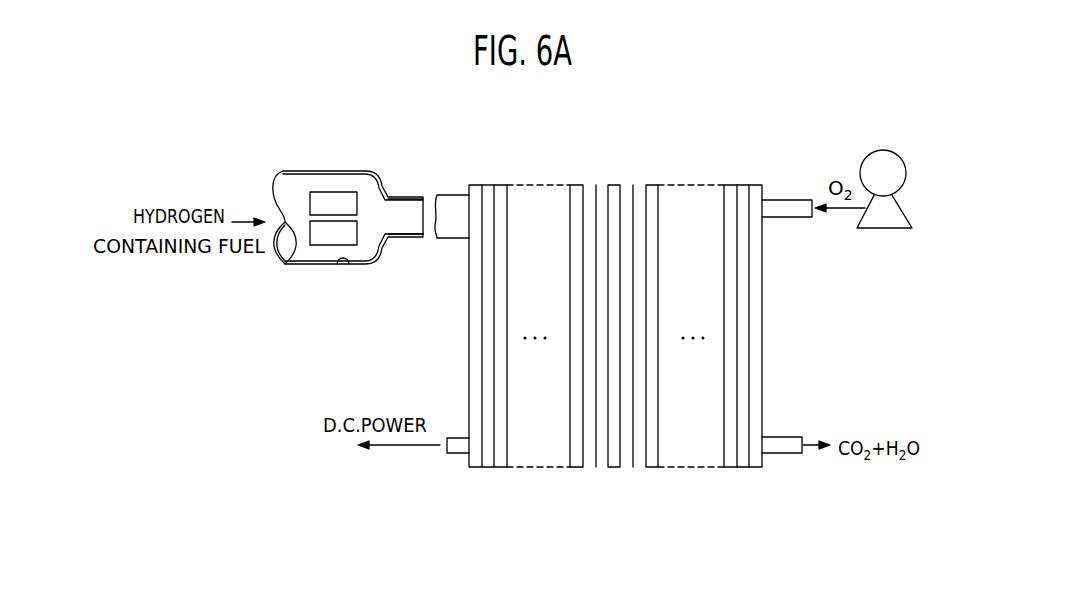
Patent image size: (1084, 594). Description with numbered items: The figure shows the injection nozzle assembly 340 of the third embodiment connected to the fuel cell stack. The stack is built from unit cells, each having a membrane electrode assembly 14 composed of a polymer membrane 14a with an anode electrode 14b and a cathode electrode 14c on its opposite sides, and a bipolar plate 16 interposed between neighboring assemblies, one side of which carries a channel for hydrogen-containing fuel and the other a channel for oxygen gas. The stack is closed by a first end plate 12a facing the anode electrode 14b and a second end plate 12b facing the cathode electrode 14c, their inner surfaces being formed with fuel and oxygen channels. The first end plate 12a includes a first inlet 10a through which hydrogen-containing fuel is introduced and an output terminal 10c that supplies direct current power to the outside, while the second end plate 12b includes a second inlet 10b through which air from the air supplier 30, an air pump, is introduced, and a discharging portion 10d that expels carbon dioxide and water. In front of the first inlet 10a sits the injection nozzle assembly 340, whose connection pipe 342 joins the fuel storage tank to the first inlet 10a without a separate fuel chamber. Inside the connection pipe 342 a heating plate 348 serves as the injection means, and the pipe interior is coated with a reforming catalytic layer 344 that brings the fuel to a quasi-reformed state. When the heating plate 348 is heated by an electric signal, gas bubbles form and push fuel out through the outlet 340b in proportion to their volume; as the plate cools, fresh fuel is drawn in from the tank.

The injection nozzle assembly 340 is at (302, 220).
The connection pipe 342 is at (287, 171).
The reforming catalytic layer 344 is at (336, 297).
The heating plate 348 is at (348, 227).
The outlet 340b is at (387, 218).
The first inlet 10a is at (452, 195).
The second inlet 10b is at (785, 200).
The output terminal 10c is at (453, 453).
The discharging portion 10d is at (783, 453).
The first end plate 12a is at (475, 467).
The second end plate 12b is at (755, 467).
The bipolar plate 16 is at (577, 185).
The membrane electrode assembly 14 is at (648, 368).
The polymer membrane 14a is at (610, 467).
The anode electrode 14b is at (592, 467).
The cathode electrode 14c is at (632, 467).
The air supplier 30 is at (885, 230).